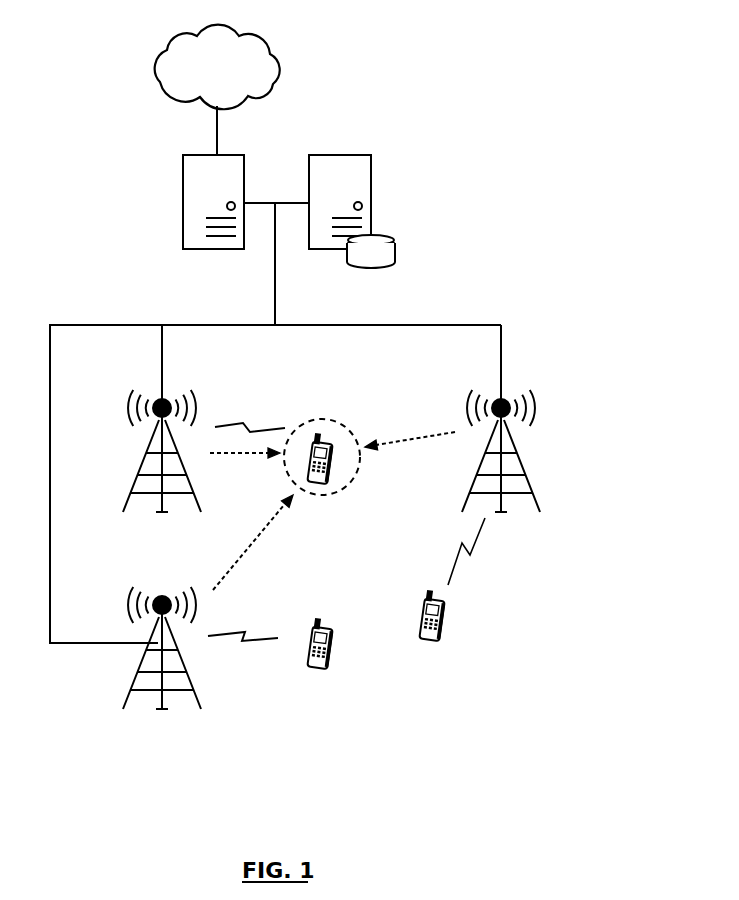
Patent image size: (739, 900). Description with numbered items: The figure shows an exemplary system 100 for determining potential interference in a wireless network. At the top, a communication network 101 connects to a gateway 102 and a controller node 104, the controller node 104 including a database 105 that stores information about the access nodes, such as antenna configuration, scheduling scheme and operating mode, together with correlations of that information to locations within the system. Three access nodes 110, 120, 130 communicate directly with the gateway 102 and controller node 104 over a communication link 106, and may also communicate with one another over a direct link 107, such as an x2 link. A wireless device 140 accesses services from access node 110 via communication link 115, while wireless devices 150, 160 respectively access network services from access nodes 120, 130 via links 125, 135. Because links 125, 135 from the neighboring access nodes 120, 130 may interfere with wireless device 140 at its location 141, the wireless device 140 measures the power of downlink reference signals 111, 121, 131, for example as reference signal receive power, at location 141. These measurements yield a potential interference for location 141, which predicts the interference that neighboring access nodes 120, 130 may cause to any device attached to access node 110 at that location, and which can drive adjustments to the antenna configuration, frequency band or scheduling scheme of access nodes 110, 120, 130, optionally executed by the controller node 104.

The system 100 is at (412, 57).
The communication network 101 is at (237, 78).
The gateway 102 is at (183, 177).
The controller node 104 is at (371, 170).
The database 105 is at (397, 240).
The communication link 106 is at (275, 268).
The direct link 107 is at (68, 323).
The access node 110 is at (142, 476).
The downlink reference signal 111 is at (255, 456).
The communication link 115 is at (243, 423).
The access node 120 is at (142, 682).
The downlink reference signal 121 is at (247, 550).
The link 125 is at (244, 640).
The access node 130 is at (523, 488).
The downlink reference signal 131 is at (388, 443).
The link 135 is at (470, 555).
The wireless device 140 is at (322, 442).
The location 141 is at (322, 493).
The wireless device 150 is at (330, 668).
The wireless device 160 is at (440, 640).